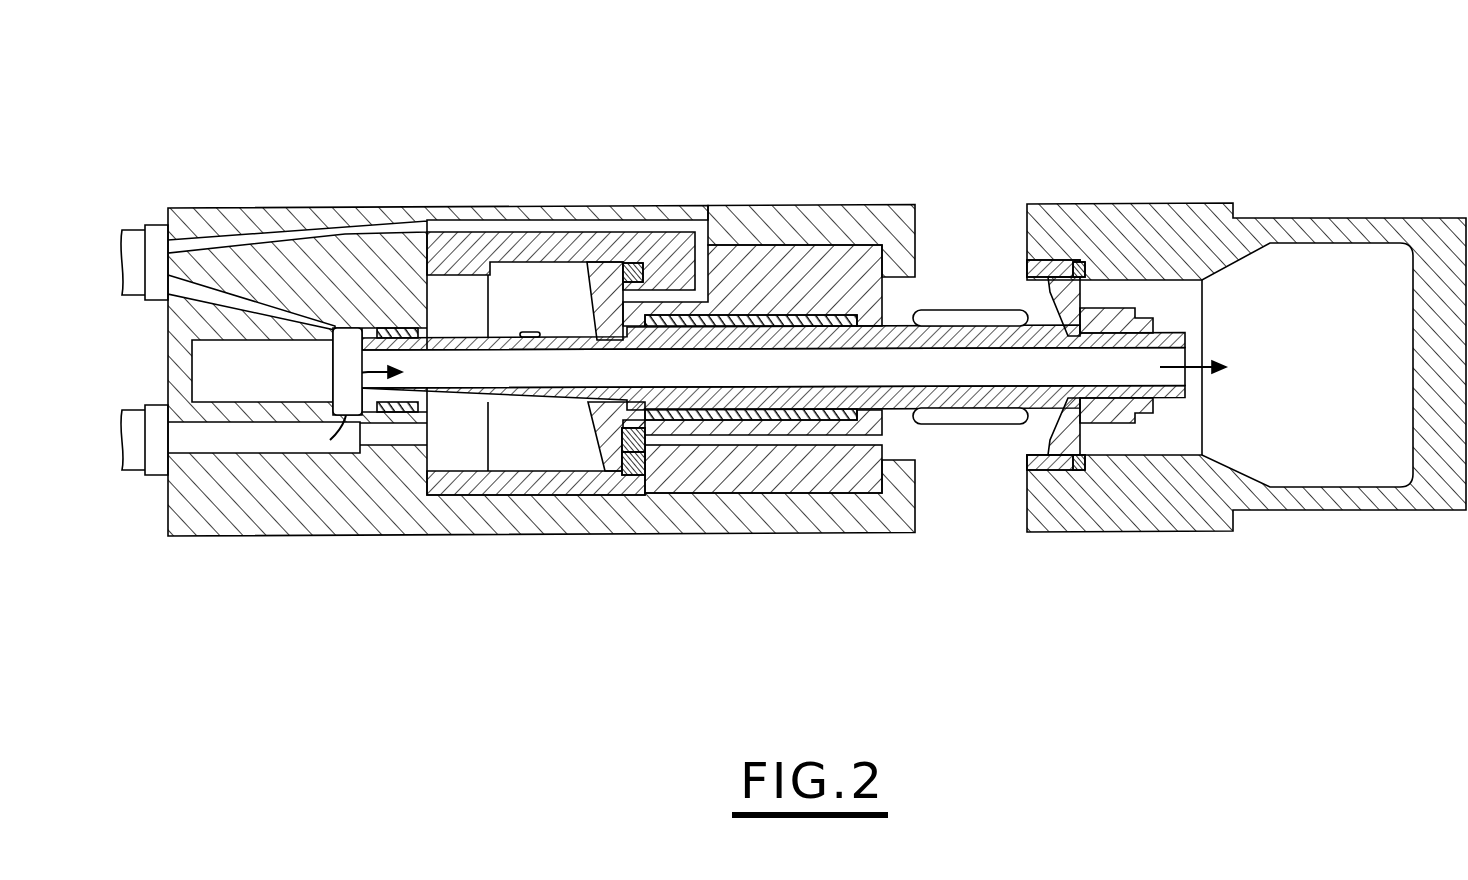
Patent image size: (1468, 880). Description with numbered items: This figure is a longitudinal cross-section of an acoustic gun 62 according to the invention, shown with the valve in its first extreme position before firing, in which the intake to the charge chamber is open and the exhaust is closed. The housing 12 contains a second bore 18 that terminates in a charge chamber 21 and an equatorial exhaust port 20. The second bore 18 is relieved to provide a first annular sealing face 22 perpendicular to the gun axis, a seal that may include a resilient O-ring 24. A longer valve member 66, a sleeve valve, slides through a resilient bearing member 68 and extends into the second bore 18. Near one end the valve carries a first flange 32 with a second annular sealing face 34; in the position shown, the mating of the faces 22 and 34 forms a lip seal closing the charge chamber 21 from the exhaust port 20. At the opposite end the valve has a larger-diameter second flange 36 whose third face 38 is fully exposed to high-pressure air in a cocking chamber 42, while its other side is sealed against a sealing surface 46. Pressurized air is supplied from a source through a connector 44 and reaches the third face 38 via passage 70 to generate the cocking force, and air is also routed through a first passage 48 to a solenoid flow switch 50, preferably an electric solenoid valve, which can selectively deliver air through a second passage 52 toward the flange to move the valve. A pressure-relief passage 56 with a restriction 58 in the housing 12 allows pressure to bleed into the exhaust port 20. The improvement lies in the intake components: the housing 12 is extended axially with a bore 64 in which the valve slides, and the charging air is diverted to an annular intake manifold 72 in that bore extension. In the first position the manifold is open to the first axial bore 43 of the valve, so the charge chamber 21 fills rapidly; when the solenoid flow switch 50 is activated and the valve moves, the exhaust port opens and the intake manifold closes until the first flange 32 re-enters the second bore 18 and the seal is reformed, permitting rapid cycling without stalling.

The housing 12 is at (1298, 218).
The second bore 18 is at (1083, 300).
The exhaust port 20 is at (930, 228).
The charge chamber 21 is at (1350, 387).
The first annular sealing face 22 is at (1093, 457).
The O-ring 24 is at (1078, 270).
The first flange 32 is at (1062, 445).
The second annular sealing face 34 is at (1085, 262).
The second flange 36 is at (622, 460).
The third face 38 is at (597, 287).
The cocking chamber 42 is at (555, 459).
The first axial bore 43 is at (782, 381).
The connector 44 is at (155, 458).
The sealing surface 46 is at (622, 280).
The first passage 48 is at (243, 293).
The solenoid flow switch 50 is at (158, 245).
The second passage 52 is at (205, 245).
The pressure-relief passage 56 is at (747, 445).
The restriction 58 is at (645, 452).
The gun 62 is at (371, 78).
The bore 64 is at (228, 380).
The valve member 66 is at (530, 338).
The resilient bearing member 68 is at (398, 328).
The passage 70 is at (392, 440).
The annular intake manifold 72 is at (357, 328).